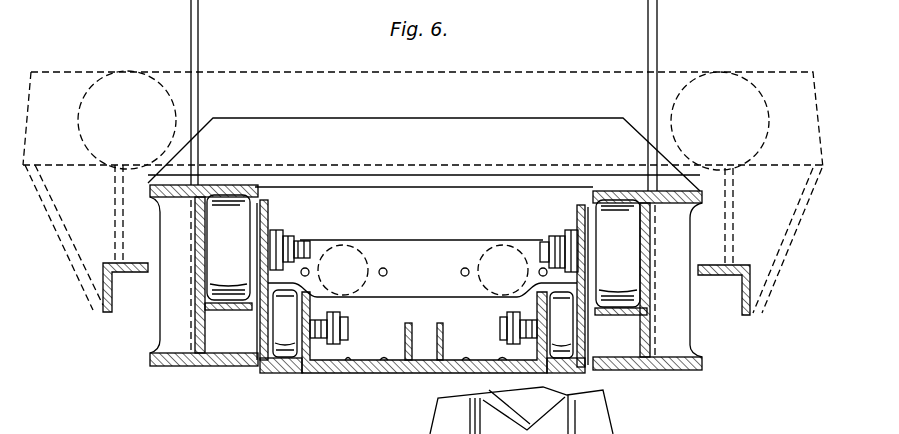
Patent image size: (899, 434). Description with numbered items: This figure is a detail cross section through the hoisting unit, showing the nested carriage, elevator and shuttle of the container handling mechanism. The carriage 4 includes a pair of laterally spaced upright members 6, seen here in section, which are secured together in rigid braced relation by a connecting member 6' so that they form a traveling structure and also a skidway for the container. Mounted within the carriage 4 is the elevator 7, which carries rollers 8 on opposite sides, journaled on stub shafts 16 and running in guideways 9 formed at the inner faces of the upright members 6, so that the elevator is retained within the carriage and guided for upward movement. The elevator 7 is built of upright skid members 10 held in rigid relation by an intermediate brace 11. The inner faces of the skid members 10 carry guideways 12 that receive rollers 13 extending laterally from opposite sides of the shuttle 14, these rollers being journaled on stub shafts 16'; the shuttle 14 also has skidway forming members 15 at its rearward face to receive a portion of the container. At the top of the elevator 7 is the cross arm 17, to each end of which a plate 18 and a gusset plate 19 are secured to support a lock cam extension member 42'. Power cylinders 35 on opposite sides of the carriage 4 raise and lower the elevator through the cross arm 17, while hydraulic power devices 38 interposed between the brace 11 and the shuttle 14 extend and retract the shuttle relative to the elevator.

The carriage 4 is at (433, 420).
The upright members 6 is at (426, 294).
The connecting member 6' is at (424, 110).
The elevator 7 is at (297, 384).
The rollers 8 is at (222, 272).
The guideways 9 is at (212, 183).
The upright skid members 10 is at (290, 377).
The intermediate brace 11 is at (427, 247).
The guideways 12 is at (263, 352).
The rollers 13 is at (267, 368).
The shuttle 14 is at (402, 370).
The skidway forming members 15 is at (337, 368).
The stub shafts 16 is at (424, 234).
The stub shafts 16' is at (423, 328).
The cross arm 17 is at (67, 72).
The plate 18 is at (113, 222).
The gusset plate 19 is at (82, 288).
The power cylinders 35 is at (124, 70).
The hydraulic power devices 38 is at (360, 248).
The lock cam extension member 42' is at (434, 316).